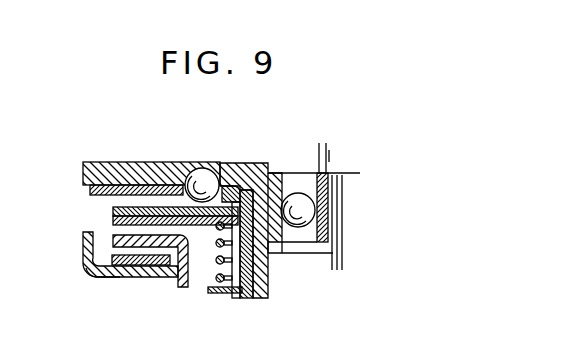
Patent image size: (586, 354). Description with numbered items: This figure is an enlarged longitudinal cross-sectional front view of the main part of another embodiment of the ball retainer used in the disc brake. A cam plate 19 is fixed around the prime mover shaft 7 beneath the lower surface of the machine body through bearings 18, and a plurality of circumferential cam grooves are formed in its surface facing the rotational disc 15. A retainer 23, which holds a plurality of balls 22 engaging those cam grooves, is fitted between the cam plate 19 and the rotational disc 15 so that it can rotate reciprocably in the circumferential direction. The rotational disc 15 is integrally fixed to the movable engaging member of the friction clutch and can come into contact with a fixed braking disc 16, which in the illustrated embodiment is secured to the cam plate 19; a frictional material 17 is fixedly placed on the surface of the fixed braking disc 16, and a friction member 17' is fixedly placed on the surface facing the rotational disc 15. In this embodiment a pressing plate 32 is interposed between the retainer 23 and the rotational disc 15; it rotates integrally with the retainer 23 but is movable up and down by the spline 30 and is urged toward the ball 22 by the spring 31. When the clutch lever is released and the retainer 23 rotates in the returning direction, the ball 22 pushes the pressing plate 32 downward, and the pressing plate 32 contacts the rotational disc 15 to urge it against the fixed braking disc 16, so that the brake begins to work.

The prime mover shaft 7 is at (318, 150).
The rotational disc 15 is at (83, 250).
The fixed braking disc 16 is at (110, 277).
The frictional material 17 is at (150, 268).
The friction member 17' is at (144, 215).
The bearings 18 is at (296, 228).
The cam plate 19 is at (117, 165).
The balls 22 is at (200, 180).
The retainer 23 is at (147, 185).
The spline 30 is at (237, 294).
The spring 31 is at (213, 279).
The pressing plate 32 is at (110, 208).